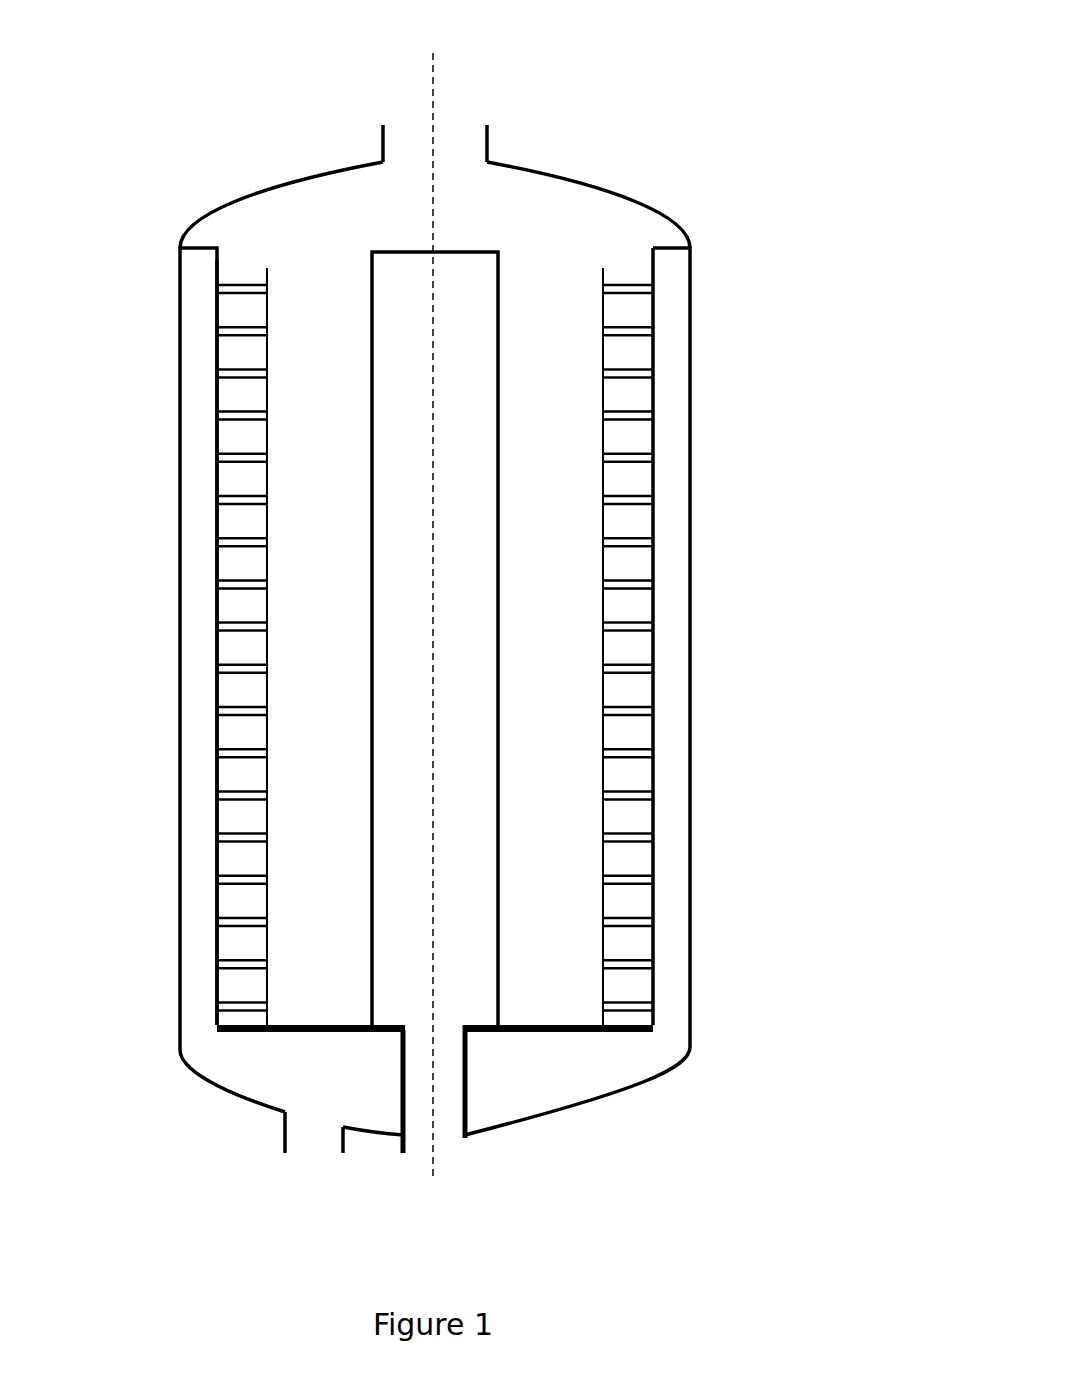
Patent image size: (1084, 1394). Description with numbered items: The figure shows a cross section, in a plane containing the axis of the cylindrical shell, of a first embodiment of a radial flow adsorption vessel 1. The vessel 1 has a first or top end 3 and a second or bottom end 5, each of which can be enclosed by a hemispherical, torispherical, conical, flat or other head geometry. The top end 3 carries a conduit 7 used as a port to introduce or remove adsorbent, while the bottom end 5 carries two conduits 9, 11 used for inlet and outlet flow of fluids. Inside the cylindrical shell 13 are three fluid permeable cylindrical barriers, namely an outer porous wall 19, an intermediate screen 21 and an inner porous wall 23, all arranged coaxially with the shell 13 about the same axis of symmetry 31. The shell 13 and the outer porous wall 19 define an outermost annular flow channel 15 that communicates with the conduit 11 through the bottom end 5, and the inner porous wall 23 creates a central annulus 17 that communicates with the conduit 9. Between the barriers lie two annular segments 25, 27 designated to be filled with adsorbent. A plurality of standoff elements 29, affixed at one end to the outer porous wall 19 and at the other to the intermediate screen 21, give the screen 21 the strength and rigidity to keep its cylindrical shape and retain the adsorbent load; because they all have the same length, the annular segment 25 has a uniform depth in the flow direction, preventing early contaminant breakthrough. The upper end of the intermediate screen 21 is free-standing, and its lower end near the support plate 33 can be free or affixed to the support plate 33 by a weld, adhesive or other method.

The vessel 1 is at (718, 385).
The first or top end 3 is at (620, 193).
The second or bottom end 5 is at (630, 1090).
The conduit 7 is at (460, 140).
The conduit 9 is at (445, 1128).
The conduit 11 is at (303, 1163).
The cylindrical shell 13 is at (690, 697).
The outermost annular flow channel 15 is at (665, 852).
The central annulus 17 is at (462, 525).
The outer porous wall 19 is at (215, 810).
The intermediate screen 21 is at (267, 903).
The inner porous wall 23 is at (372, 1002).
The annular segment 25 is at (252, 525).
The annular segment 27 is at (542, 613).
The standoff elements 29 is at (245, 665).
The axis of symmetry 31 is at (428, 62).
The support plate 33 is at (555, 1028).